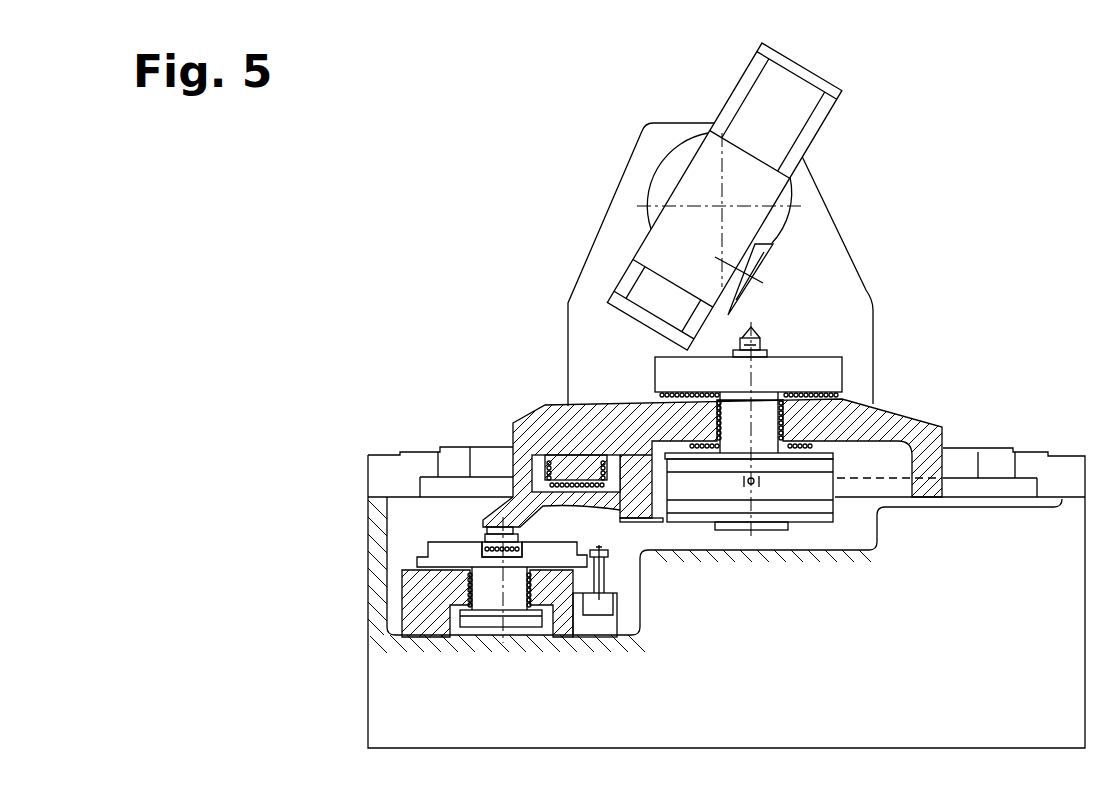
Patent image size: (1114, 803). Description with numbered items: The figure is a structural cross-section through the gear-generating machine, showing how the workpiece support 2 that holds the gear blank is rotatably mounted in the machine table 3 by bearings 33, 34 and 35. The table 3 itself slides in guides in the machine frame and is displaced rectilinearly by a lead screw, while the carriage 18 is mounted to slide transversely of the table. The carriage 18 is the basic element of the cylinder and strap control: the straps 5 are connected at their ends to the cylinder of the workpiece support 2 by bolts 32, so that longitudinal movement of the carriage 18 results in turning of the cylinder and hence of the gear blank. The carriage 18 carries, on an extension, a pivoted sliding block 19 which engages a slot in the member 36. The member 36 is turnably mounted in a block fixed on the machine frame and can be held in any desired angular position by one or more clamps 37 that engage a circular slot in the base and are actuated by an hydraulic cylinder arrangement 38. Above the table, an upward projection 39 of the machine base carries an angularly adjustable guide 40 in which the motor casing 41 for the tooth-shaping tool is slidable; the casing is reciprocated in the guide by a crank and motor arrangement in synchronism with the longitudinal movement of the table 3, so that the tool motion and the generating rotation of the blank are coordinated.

The workpiece support 2 is at (825, 373).
The machine table 3 is at (940, 427).
The straps 5 is at (725, 482).
The carriage 18 is at (537, 475).
The sliding block 19 is at (500, 552).
The bolts 32 is at (753, 488).
The bearing 33 is at (842, 395).
The bearing 34 is at (777, 405).
The bearing 35 is at (800, 450).
The member 36 is at (547, 553).
The clamp 37 is at (607, 553).
The hydraulic cylinder arrangement 38 is at (617, 608).
The upward projection 39 is at (847, 283).
The angularly adjustable guide 40 is at (785, 130).
The motor casing 41 is at (748, 222).